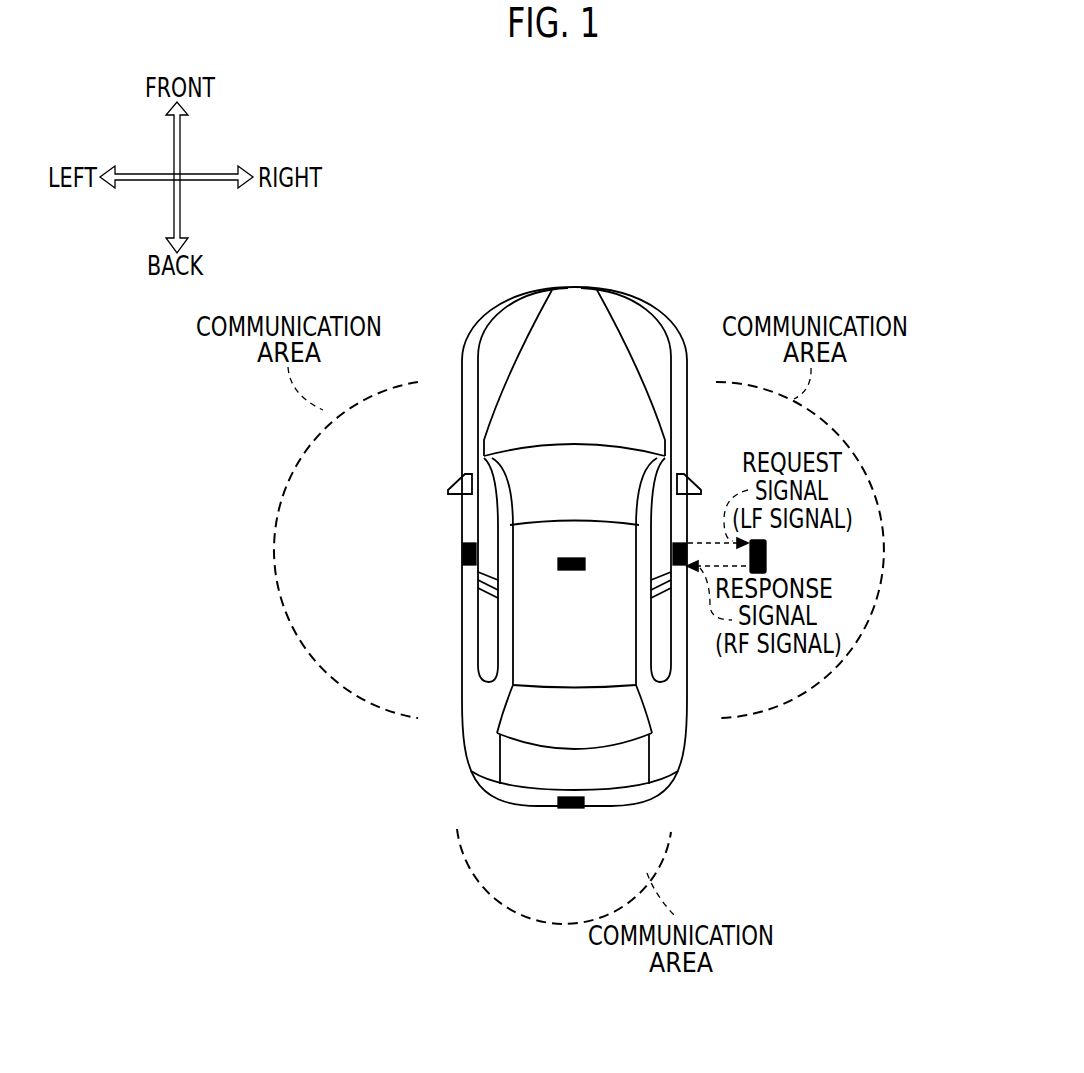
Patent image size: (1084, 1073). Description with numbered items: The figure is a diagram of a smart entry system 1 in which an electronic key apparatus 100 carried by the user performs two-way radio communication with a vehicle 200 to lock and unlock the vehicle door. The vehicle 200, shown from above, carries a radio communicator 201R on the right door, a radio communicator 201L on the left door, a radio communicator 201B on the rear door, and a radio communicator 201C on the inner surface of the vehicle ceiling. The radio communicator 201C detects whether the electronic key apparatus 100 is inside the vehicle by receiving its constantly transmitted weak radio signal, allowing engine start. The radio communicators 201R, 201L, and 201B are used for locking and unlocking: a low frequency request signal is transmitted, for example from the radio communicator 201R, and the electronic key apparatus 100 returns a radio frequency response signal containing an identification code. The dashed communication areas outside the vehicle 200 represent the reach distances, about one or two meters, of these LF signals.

The smart entry system 1 is at (888, 152).
The vehicle 200 is at (643, 301).
The radio communicator 201L is at (462, 553).
The radio communicator 201R is at (678, 567).
The radio communicator 201C is at (572, 572).
The radio communicator 201B is at (568, 810).
The electronic key apparatus 100 is at (767, 554).